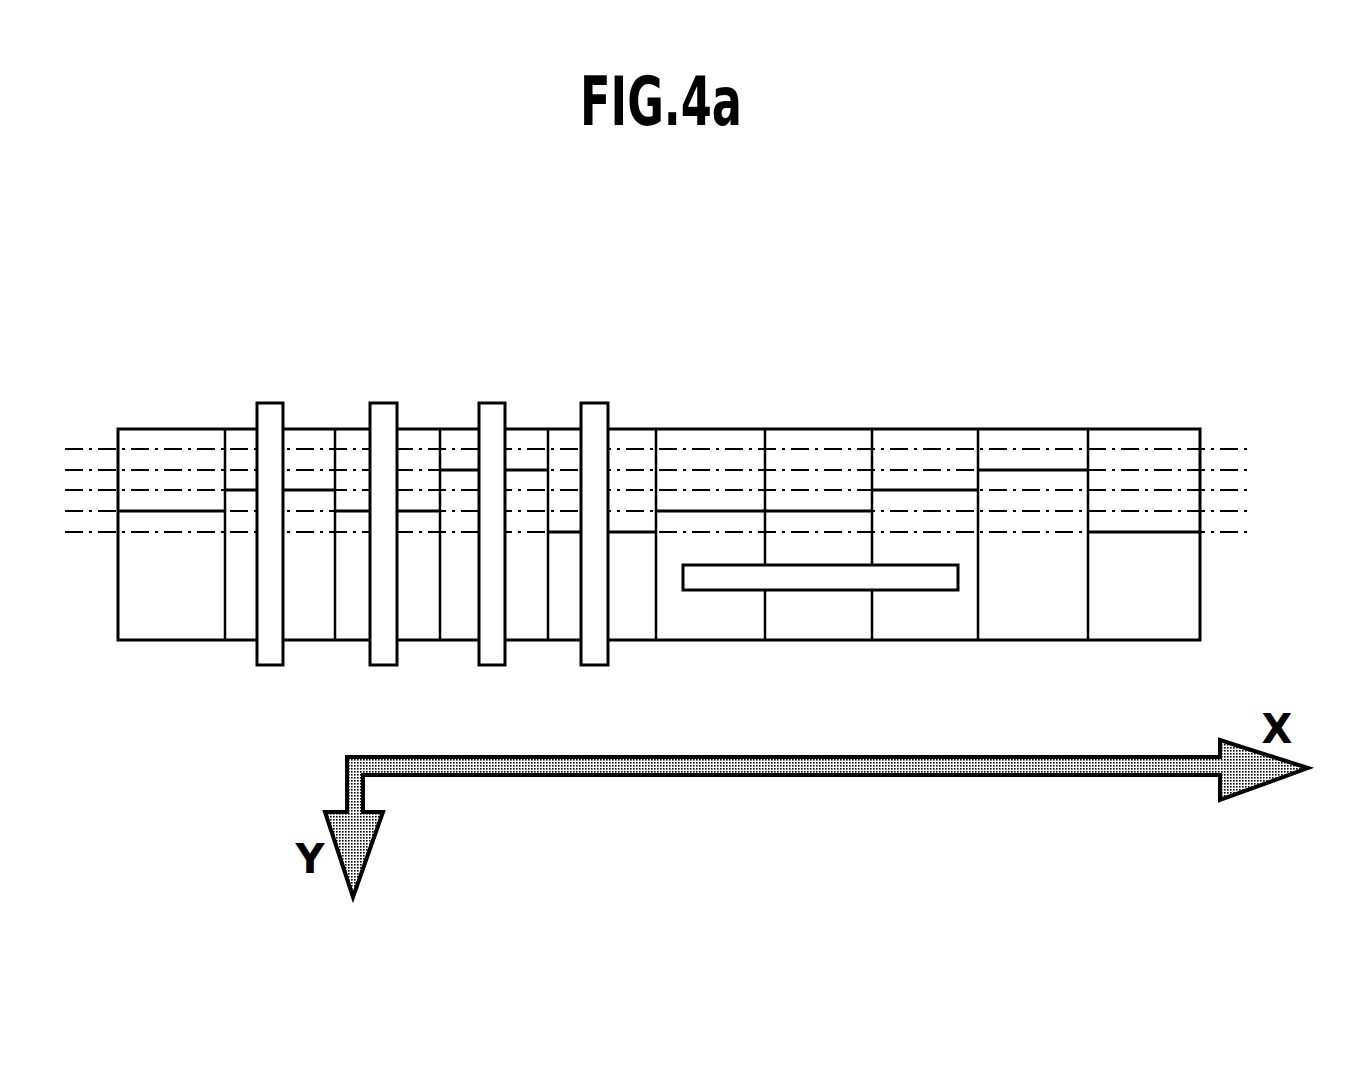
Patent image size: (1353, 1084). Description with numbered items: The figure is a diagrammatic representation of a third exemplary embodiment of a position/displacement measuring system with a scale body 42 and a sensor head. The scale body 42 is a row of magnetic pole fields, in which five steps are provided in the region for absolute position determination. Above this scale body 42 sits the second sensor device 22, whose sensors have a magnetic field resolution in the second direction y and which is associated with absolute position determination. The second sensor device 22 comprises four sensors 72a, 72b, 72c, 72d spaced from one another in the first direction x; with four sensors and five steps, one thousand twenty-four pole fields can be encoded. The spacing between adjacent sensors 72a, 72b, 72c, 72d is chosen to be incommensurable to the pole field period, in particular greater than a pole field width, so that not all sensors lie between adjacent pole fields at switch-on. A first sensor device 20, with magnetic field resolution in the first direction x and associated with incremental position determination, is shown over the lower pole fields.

The scale body 42 is at (199, 649).
The second sensor device 22 is at (443, 442).
The sensor 72a is at (268, 413).
The sensor 72b is at (385, 413).
The sensor 72c is at (495, 415).
The sensor 72d is at (604, 492).
The first sensor device 20 is at (857, 590).